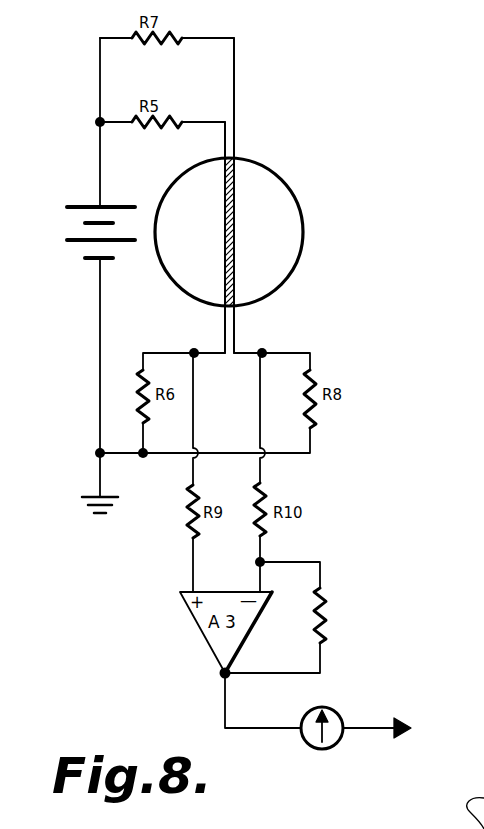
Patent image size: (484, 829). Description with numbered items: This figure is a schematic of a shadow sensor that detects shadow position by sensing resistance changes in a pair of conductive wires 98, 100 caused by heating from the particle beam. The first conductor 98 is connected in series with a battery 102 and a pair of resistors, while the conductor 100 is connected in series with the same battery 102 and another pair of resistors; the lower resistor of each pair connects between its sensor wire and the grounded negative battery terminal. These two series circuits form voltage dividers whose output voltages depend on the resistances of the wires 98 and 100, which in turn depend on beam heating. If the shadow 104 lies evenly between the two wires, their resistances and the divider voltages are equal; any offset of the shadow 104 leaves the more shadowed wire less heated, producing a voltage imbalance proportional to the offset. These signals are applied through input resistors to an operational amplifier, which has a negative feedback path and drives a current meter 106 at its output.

The first conductor 98 is at (225, 141).
The conductor 100 is at (234, 143).
The battery 102 is at (64, 221).
The shadow 104 is at (232, 205).
The current meter 106 is at (338, 712).